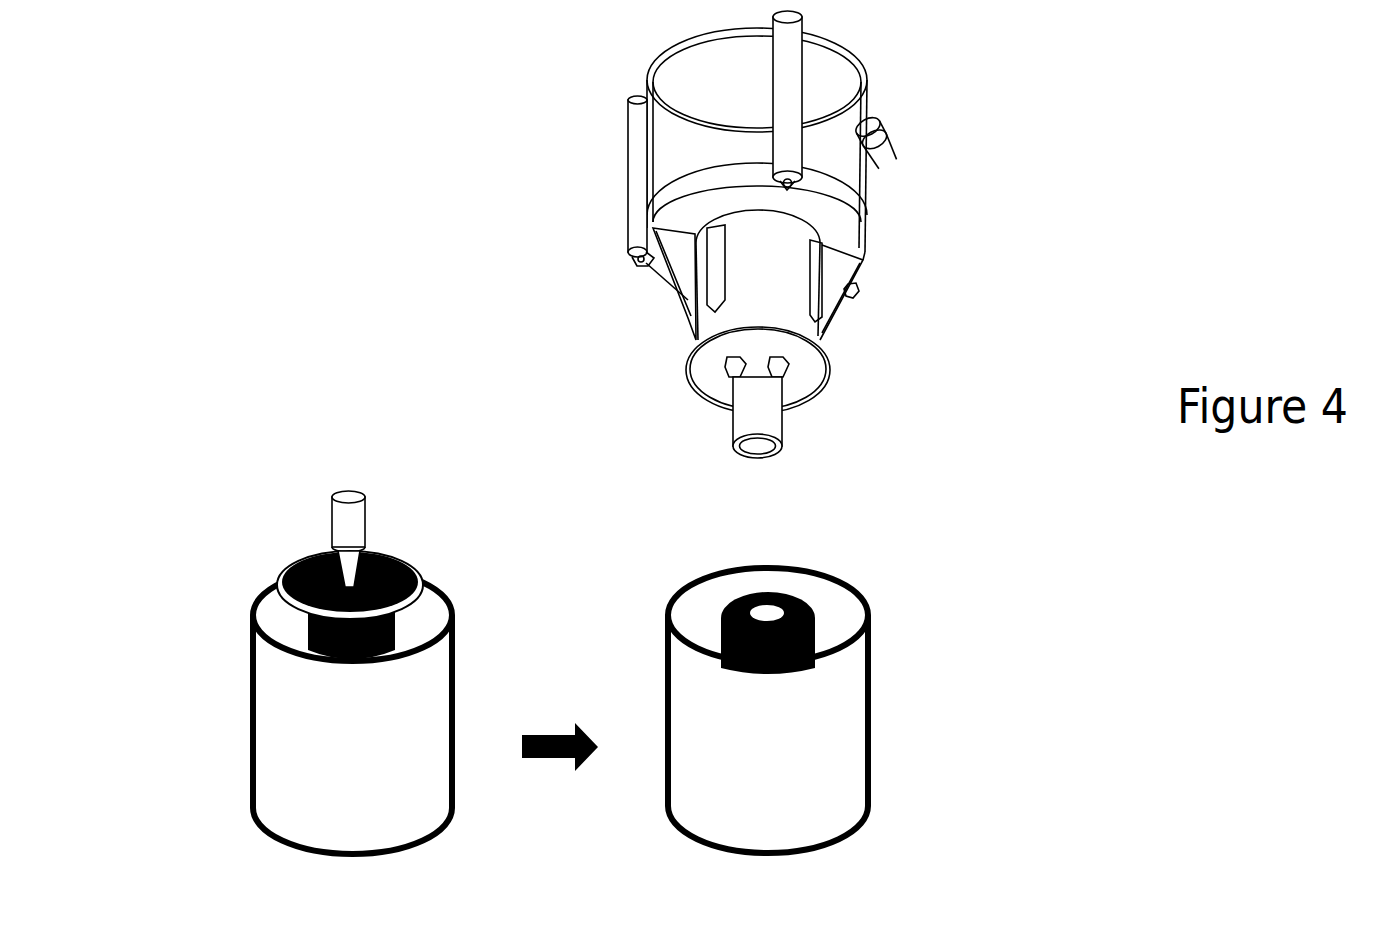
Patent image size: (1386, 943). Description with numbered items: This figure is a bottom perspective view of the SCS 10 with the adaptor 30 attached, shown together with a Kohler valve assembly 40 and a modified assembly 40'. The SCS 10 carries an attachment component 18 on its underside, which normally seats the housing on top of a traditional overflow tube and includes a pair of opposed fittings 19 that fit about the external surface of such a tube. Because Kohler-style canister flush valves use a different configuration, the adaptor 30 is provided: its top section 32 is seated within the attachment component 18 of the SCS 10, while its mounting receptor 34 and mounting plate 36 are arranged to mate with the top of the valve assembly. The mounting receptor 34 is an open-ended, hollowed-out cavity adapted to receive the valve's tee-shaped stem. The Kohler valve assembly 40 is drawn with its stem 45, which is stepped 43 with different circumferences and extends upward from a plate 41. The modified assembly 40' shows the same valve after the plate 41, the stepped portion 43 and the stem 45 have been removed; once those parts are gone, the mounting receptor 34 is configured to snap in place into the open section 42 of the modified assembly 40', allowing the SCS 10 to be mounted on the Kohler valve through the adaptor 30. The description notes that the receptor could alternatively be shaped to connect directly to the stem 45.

The SCS 10 is at (920, 140).
The attachment component 18 is at (670, 310).
The opposed fittings 19 is at (830, 300).
The adapter 30 is at (759, 393).
The top section 32 is at (772, 300).
The mounting receptor 34 is at (735, 420).
The mounting plate 36 is at (688, 370).
The Kohler valve assembly 40 is at (315, 672).
The modified assembly 40' is at (851, 697).
The plate 41 is at (414, 568).
The open section 42 is at (789, 577).
The stepped portion 43 is at (343, 556).
The stem 45 is at (366, 524).